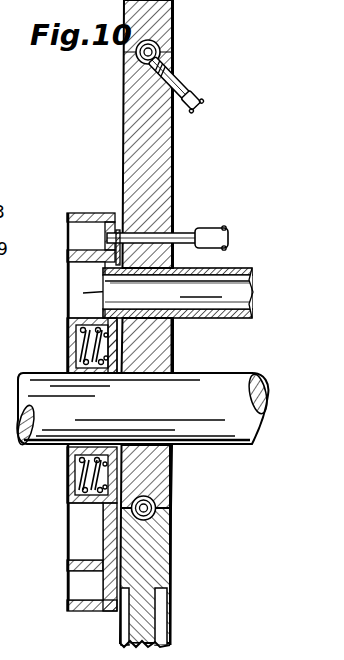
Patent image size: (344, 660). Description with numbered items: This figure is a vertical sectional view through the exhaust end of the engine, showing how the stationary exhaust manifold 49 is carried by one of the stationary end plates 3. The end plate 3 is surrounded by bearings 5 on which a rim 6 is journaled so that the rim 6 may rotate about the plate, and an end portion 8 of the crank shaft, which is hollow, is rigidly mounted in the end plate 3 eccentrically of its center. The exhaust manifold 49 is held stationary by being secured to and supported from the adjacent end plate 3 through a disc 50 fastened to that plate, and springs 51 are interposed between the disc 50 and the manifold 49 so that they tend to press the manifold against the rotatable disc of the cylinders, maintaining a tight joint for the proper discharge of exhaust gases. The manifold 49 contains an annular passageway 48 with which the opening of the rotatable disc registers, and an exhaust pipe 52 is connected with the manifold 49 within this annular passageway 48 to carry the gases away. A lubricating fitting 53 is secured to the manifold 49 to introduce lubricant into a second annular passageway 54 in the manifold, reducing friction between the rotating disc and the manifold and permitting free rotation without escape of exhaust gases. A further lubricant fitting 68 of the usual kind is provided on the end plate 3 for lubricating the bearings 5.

The end plate 3 is at (170, 166).
The bearing 5 is at (160, 47).
The rim 6 is at (174, 18).
The crank shaft end portion 8 is at (248, 437).
The annular passageway 48 is at (70, 291).
The exhaust manifold 49 is at (67, 605).
The disc 50 is at (120, 355).
The spring 51 is at (76, 345).
The exhaust pipe 52 is at (250, 290).
The lubricating fitting 53 is at (229, 236).
The annular passageway 54 is at (74, 404).
The lubricant fitting 68 is at (192, 96).